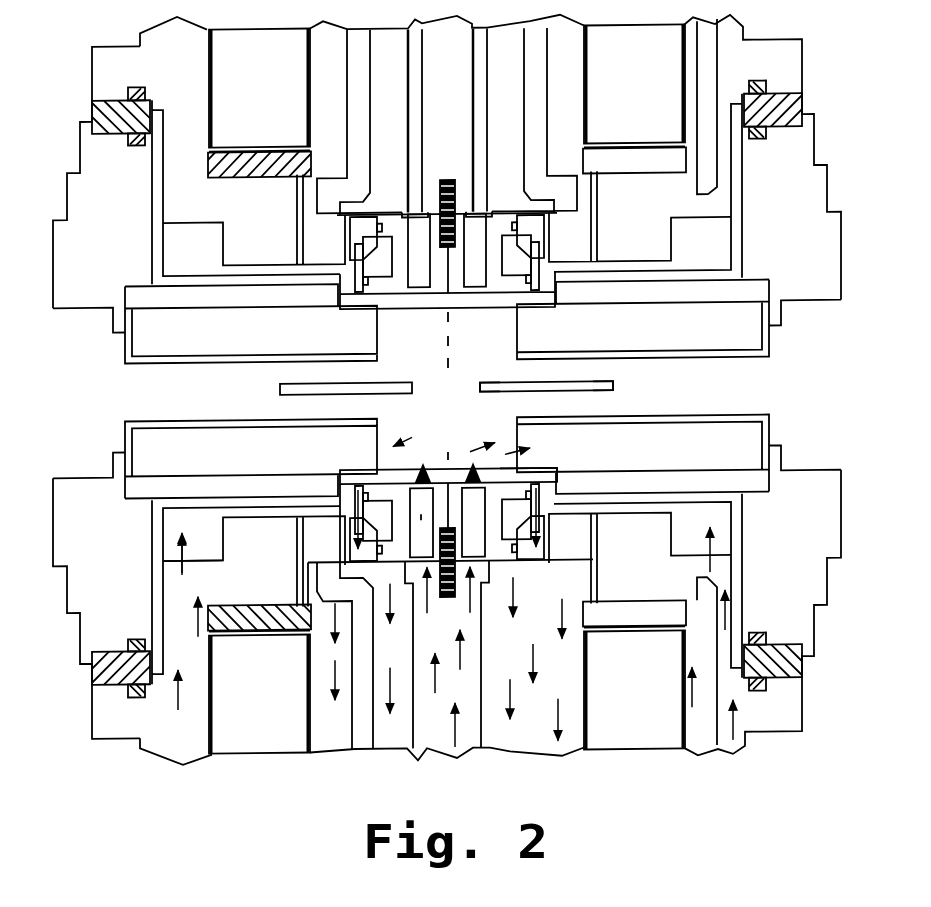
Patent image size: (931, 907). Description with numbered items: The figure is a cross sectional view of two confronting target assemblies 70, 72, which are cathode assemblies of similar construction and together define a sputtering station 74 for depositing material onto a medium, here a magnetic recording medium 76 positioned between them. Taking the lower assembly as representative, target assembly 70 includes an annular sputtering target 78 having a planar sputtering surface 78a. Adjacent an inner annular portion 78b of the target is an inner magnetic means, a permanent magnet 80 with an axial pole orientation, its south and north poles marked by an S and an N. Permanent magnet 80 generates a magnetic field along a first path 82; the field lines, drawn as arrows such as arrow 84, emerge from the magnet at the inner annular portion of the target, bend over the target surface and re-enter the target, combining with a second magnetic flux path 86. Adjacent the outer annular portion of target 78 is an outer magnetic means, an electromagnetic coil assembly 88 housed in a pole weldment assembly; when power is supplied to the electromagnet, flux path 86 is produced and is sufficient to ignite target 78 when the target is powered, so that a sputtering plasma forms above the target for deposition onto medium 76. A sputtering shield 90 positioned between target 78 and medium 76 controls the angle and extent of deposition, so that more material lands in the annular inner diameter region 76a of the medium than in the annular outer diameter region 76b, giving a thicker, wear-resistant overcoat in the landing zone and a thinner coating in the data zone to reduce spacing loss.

The target assembly 70 is at (77, 452).
The target assembly 72 is at (88, 310).
The sputtering station 74 is at (180, 388).
The magnetic recording medium 76 is at (582, 379).
The inner diameter region 76a is at (482, 383).
The outer diameter region 76b is at (600, 390).
The sputtering target 78 is at (543, 466).
The planar sputtering surface 78a is at (548, 463).
The inner annular portion 78b is at (471, 466).
The permanent magnet 80 is at (478, 513).
The first path 82 is at (356, 507).
The arrow 84 is at (358, 450).
The second magnetic flux path 86 is at (181, 564).
The electromagnetic coil assembly 88 is at (259, 678).
The sputtering shield 90 is at (737, 412).